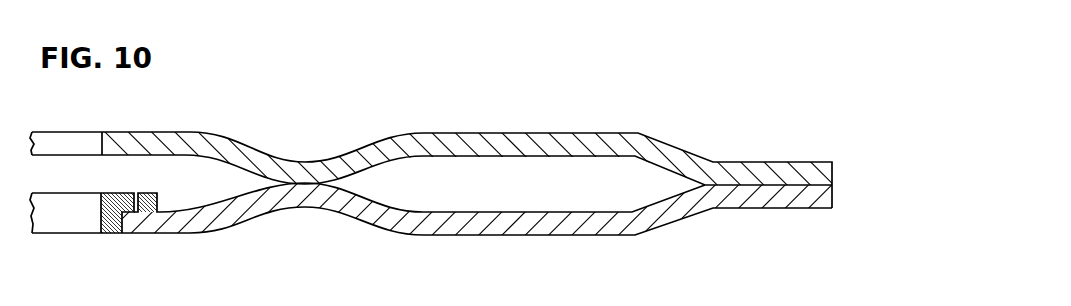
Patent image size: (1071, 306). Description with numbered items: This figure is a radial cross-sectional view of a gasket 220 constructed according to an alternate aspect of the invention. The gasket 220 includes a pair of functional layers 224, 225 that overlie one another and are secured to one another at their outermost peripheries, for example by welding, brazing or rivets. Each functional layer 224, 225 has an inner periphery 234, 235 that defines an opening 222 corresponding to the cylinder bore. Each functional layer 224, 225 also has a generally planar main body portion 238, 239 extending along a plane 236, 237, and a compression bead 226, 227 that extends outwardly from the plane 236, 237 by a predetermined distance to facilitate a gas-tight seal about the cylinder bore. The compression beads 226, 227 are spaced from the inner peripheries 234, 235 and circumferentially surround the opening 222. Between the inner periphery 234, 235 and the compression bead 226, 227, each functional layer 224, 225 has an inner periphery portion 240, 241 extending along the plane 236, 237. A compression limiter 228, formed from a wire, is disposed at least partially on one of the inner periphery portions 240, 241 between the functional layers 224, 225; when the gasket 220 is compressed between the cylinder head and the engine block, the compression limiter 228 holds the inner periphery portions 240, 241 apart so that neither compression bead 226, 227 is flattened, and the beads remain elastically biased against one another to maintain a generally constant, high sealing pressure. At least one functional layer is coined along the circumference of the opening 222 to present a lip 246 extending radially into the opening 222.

The gasket 220 is at (686, 134).
The opening 222 is at (72, 182).
The functional layer 224 is at (522, 236).
The functional layer 225 is at (597, 134).
The compression bead 226 is at (296, 198).
The compression bead 227 is at (312, 166).
The compression limiter 228 is at (99, 213).
The inner periphery 234 is at (117, 233).
The inner periphery 235 is at (102, 143).
The plane 236 is at (462, 212).
The plane 237 is at (470, 156).
The main body portion 238 is at (609, 230).
The main body portion 239 is at (560, 140).
The inner periphery portion 240 is at (168, 203).
The inner periphery portion 241 is at (170, 165).
The lip 246 is at (146, 192).